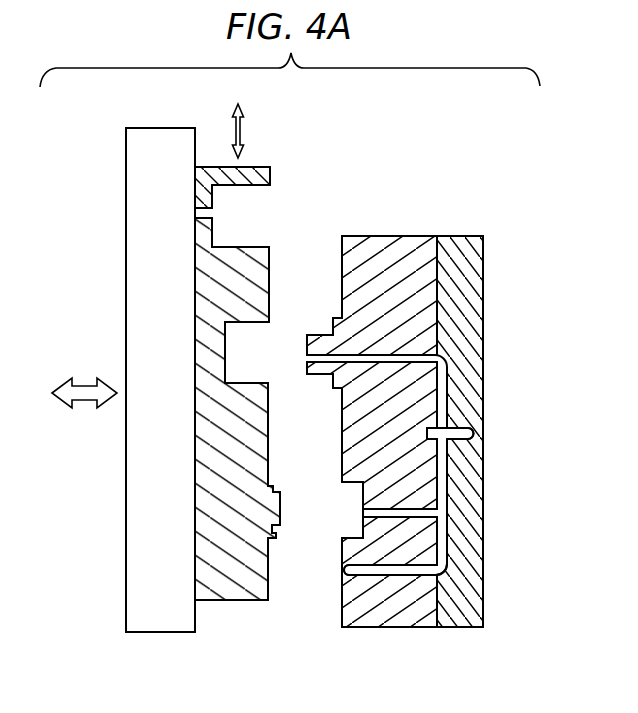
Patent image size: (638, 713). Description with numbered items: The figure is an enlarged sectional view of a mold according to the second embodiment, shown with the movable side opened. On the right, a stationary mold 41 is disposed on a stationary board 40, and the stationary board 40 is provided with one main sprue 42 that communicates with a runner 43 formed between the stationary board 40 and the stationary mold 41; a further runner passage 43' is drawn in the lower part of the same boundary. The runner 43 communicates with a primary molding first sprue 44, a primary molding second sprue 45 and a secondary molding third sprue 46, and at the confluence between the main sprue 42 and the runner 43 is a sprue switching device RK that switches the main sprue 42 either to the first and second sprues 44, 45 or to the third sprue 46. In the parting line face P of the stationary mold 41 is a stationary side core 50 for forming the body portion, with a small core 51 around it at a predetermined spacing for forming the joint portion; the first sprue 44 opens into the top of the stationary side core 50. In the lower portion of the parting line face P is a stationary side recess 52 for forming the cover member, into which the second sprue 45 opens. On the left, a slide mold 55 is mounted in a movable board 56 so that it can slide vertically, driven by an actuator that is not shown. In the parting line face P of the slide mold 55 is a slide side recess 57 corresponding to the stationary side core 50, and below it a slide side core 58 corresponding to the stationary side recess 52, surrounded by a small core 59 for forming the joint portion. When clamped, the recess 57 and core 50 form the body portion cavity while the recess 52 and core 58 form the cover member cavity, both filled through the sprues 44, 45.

The stationary board 40 is at (464, 236).
The stationary mold 41 is at (407, 236).
The main sprue 42 is at (473, 436).
The runner 43 is at (479, 391).
The lower runner 43' is at (434, 507).
The primary molding first sprue 44 is at (435, 345).
The primary molding second sprue 45 is at (413, 517).
The secondary molding third sprue 46 is at (420, 572).
The stationary side core 50 is at (318, 335).
The small core 51 is at (334, 320).
The stationary side recess 52 is at (362, 502).
The slide mold 55 is at (264, 167).
The movable board 56 is at (167, 128).
The slide side recess 57 is at (238, 350).
The slide side core 58 is at (283, 505).
The small core 59 is at (276, 486).
The sprue switching device RK is at (445, 428).
The parting line face P is at (272, 262).